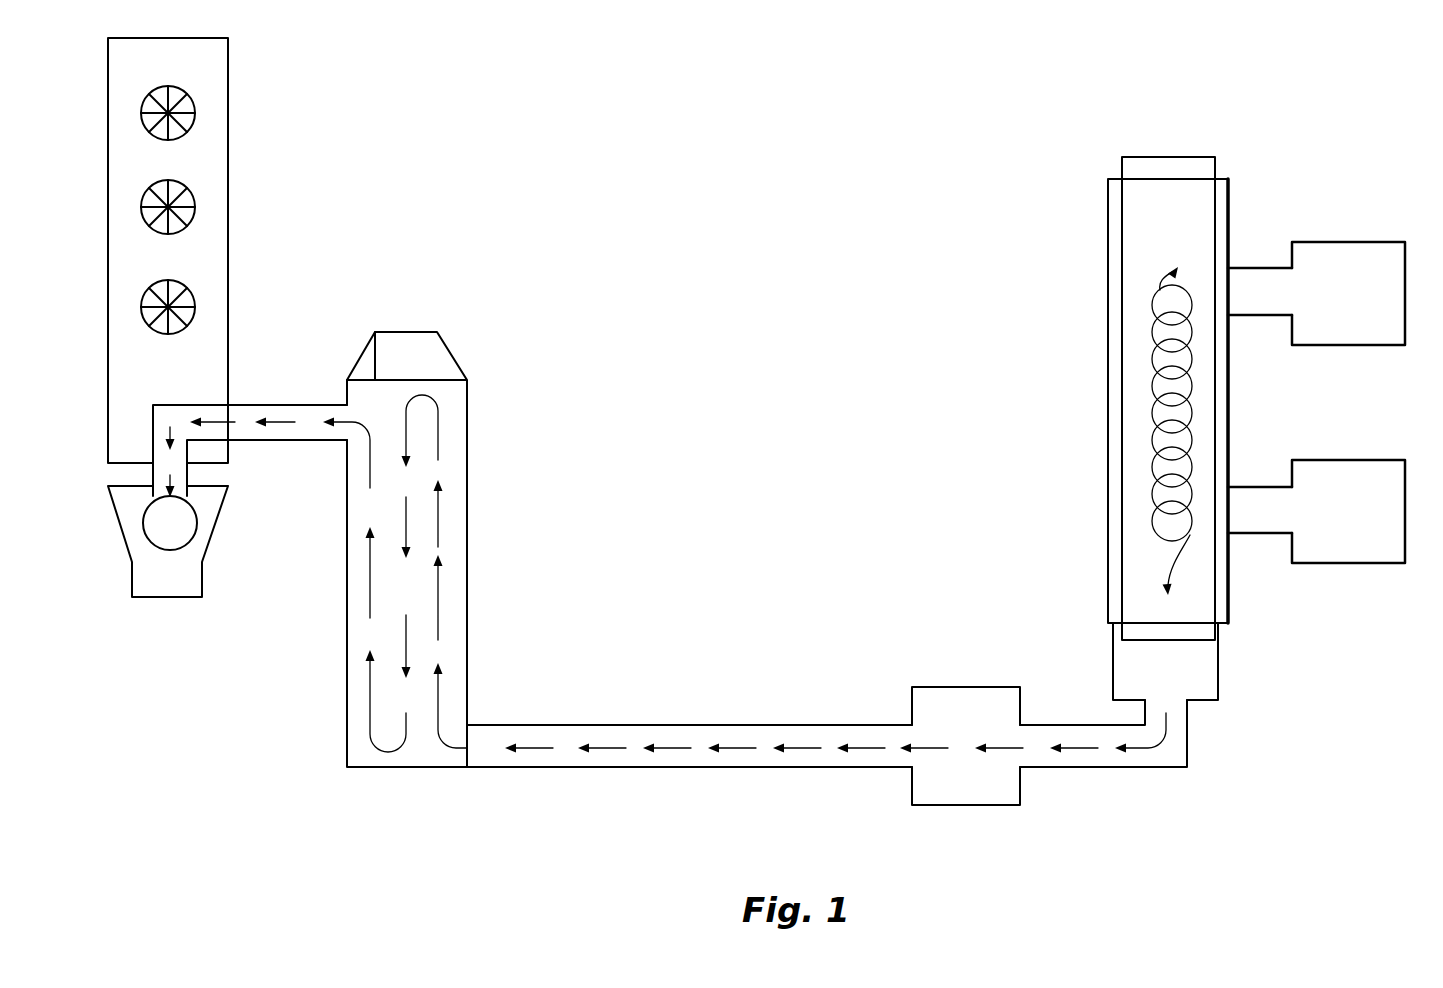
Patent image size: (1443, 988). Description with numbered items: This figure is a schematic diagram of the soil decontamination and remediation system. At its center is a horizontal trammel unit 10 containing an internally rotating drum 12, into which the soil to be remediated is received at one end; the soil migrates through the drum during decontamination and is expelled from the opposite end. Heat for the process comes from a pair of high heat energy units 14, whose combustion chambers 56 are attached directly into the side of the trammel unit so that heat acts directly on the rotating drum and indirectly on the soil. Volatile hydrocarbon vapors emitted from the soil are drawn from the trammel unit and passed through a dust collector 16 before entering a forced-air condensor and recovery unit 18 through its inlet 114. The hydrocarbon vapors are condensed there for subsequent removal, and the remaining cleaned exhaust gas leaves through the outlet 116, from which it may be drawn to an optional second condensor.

The horizontal trammel unit 10 is at (1098, 373).
The internally rotating drum 12 is at (1122, 163).
The high heat energy unit 14 is at (1340, 240).
The dust collector 16 is at (990, 805).
The forced-air condensor and recovery unit 18 is at (467, 575).
The combustion chamber 56 is at (1259, 283).
The inlet 114 is at (480, 733).
The outlet 116 is at (337, 442).